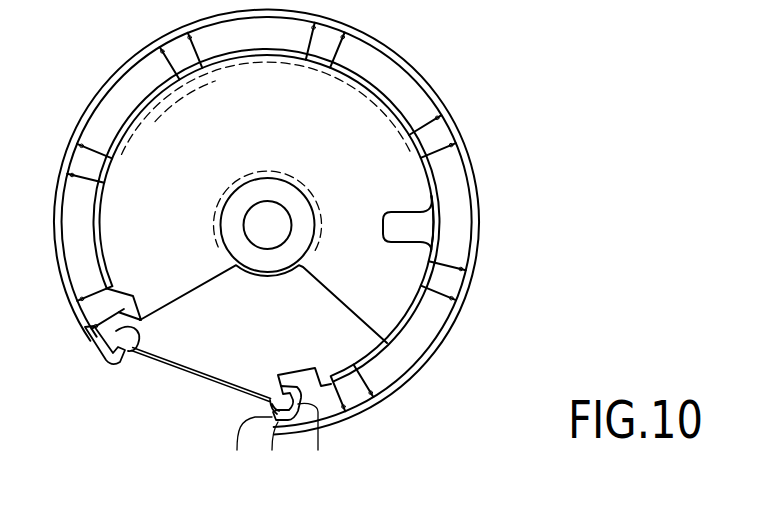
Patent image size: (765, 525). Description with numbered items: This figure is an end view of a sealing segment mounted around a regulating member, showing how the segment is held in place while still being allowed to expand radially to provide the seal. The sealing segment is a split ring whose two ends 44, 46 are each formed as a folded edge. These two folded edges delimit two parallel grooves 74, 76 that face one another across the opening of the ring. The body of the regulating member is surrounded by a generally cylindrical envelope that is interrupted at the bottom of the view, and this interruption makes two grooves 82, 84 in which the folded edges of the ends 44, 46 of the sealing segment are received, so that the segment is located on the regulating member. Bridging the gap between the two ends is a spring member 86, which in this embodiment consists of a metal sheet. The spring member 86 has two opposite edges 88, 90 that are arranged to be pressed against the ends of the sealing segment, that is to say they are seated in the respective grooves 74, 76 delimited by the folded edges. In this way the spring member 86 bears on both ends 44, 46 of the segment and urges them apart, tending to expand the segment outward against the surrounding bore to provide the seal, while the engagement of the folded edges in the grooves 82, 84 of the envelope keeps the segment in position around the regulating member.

The end of the sealing segment 44 is at (110, 376).
The end of the sealing segment 46 is at (272, 437).
The groove 74 is at (160, 352).
The groove 76 is at (280, 384).
The groove of the envelope 82 is at (84, 343).
The groove of the envelope 84 is at (318, 432).
The spring member 86 is at (190, 377).
The edge of the spring member 88 is at (124, 366).
The edge of the spring member 90 is at (267, 412).